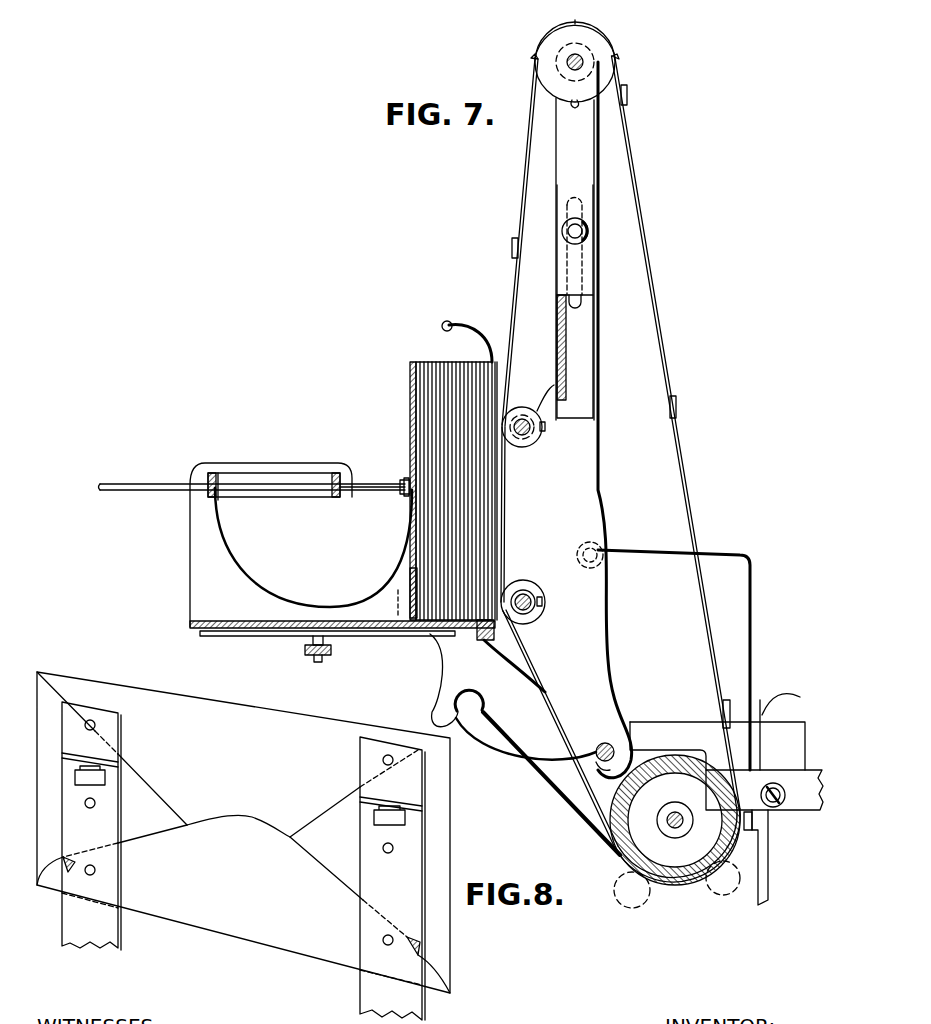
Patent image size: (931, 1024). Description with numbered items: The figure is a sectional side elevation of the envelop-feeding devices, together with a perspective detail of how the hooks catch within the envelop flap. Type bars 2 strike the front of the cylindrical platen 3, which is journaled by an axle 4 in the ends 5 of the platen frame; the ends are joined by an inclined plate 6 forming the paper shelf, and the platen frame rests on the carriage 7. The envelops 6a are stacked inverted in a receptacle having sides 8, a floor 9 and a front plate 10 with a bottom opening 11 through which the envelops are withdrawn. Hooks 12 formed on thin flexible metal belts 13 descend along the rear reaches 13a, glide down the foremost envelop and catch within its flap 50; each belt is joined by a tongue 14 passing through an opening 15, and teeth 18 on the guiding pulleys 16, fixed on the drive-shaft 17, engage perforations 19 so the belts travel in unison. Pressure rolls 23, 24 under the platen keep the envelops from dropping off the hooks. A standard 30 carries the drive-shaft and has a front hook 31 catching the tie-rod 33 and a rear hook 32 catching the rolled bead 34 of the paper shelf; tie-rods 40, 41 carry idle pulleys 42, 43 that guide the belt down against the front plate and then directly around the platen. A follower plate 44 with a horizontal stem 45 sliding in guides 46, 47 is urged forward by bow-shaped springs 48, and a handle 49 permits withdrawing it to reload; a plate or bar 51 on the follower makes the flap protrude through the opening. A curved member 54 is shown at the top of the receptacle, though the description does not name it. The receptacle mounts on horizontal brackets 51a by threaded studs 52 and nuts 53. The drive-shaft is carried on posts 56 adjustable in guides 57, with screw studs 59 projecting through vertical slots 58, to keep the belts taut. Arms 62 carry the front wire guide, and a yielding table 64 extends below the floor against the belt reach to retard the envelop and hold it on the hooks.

In FIG. 7, the type bars 2 is at (762, 866).
In FIG. 7, the cylindrical platen 3 is at (626, 790).
In FIG. 7, the axle 4 is at (685, 820).
In FIG. 7, the platen frame ends 5 is at (664, 722).
In FIG. 7, the inclined plate 6 is at (573, 812).
In FIG. 7, the envelops 6a is at (415, 370).
In FIG. 8, the envelops 6a is at (243, 705).
In FIG. 7, the carriage 7 is at (764, 790).
In FIG. 7, the receptacle sides 8 is at (271, 545).
In FIG. 7, the floor 9 is at (205, 623).
In FIG. 7, the front plate 10 is at (498, 387).
In FIG. 7, the opening 11 is at (500, 501).
In FIG. 7, the hooks 12 is at (628, 96).
In FIG. 8, the hooks 12 is at (62, 866).
In FIG. 7, the work-supporting belts 13 is at (656, 312).
In FIG. 8, the work-supporting belts 13 is at (243, 861).
In FIG. 7, the rear reaches 13a is at (518, 292).
In FIG. 8, the tongue 14 is at (90, 780).
In FIG. 8, the opening 15 is at (390, 809).
In FIG. 7, the guiding pulleys 16 is at (604, 47).
In FIG. 7, the drive-shaft 17 is at (567, 62).
In FIG. 7, the teeth 18 is at (574, 114).
In FIG. 8, the perforations 19 is at (90, 875).
In FIG. 7, the pressure roll 23 is at (641, 903).
In FIG. 7, the pressure roll 24 is at (724, 895).
In FIG. 7, the standard 30 is at (584, 571).
In FIG. 7, the front hook 31 is at (604, 765).
In FIG. 7, the rear hook 32 is at (430, 696).
In FIG. 7, the tie-rod 33 is at (605, 743).
In FIG. 7, the rolled bead-portion 34 is at (472, 700).
In FIG. 7, the tie-rod 40 is at (522, 434).
In FIG. 7, the tie-rod 41 is at (523, 594).
In FIG. 7, the idle pulley 42 is at (543, 433).
In FIG. 7, the idle pulley 43 is at (538, 620).
In FIG. 7, the follower plate 44 is at (414, 438).
In FIG. 7, the guiding stem 45 is at (272, 473).
In FIG. 7, the guide 46 is at (342, 479).
In FIG. 7, the guide 47 is at (214, 497).
In FIG. 7, the bow-shaped springs 48 is at (262, 585).
In FIG. 7, the handle 49 is at (113, 485).
In FIG. 8, the flap 50 is at (237, 821).
In FIG. 7, the plate or bar 51 is at (408, 590).
In FIG. 7, the horizontal brackets 51a is at (254, 637).
In FIG. 7, the threaded studs 52 is at (318, 663).
In FIG. 7, the nuts 53 is at (332, 652).
In FIG. 7, the hook 54 is at (466, 332).
In FIG. 7, the posts 56 is at (575, 259).
In FIG. 7, the guides 57 is at (551, 370).
In FIG. 7, the vertical slots 58 is at (577, 304).
In FIG. 7, the screw studs 59 is at (589, 233).
In FIG. 7, the arms 62 is at (753, 630).
In FIG. 7, the table 64 is at (509, 650).